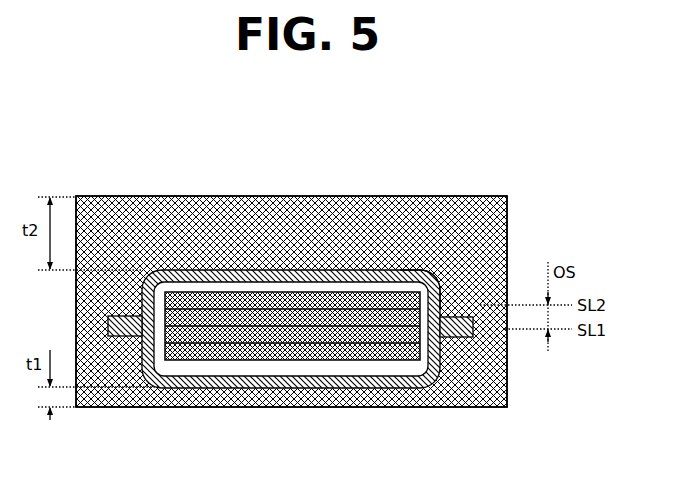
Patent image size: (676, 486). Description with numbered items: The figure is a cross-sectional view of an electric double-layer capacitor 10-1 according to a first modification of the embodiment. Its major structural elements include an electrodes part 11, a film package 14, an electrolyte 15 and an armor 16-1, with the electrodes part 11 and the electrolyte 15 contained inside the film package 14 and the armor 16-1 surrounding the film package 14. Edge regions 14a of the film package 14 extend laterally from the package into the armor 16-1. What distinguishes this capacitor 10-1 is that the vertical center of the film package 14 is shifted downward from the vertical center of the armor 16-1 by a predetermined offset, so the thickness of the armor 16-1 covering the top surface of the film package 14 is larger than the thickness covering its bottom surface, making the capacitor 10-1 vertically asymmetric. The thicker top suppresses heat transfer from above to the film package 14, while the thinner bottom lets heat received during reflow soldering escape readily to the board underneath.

The electric double-layer capacitor 10-1 is at (84, 195).
The electrodes part 11 is at (230, 291).
The film package 14 is at (325, 278).
The sealing portion of pouch 14a is at (128, 315).
The electrolyte 15 is at (425, 273).
The armor 16-1 is at (160, 222).